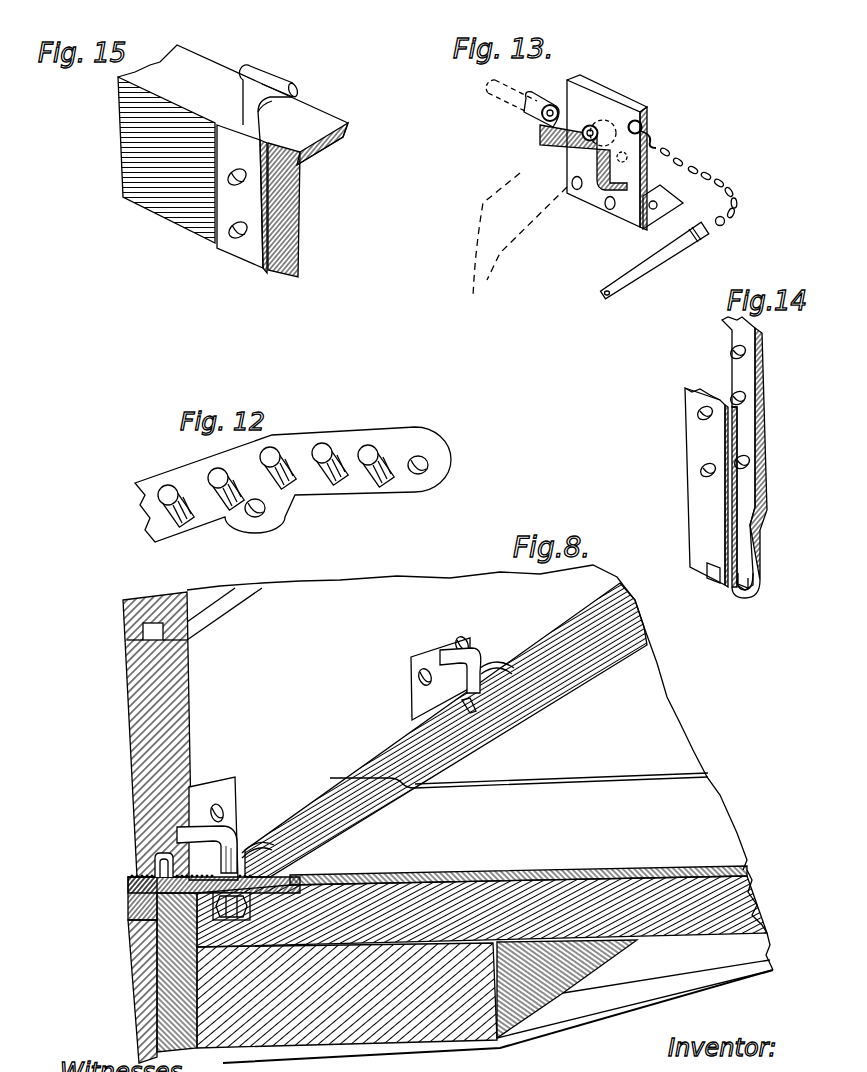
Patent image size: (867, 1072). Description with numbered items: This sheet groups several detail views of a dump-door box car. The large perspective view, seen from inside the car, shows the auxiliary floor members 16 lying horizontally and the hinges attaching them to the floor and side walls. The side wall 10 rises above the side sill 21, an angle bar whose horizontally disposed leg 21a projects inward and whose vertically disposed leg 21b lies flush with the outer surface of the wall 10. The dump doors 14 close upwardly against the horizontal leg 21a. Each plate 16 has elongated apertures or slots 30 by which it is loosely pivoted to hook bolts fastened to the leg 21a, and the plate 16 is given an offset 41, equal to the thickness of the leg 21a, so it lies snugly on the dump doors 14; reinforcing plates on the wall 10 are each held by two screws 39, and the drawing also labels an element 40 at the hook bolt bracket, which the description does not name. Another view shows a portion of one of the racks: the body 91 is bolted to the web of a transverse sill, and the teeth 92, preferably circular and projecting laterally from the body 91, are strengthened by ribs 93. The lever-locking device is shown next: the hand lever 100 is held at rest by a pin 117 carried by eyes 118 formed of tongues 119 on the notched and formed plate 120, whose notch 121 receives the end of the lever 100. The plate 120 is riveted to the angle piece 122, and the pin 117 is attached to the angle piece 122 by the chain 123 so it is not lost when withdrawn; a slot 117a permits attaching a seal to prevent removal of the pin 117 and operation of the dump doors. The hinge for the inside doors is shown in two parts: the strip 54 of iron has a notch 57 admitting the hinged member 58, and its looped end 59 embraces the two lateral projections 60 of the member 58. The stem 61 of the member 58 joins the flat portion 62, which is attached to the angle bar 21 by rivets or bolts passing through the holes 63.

In FIG. 8, the side wall 10 is at (140, 757).
In FIG. 8, the dump door 14 is at (485, 966).
In FIG. 8, the auxiliary floor member 16 is at (467, 717).
In FIG. 15, the side sill 21 is at (233, 161).
In FIG. 8, the side sill 21 is at (137, 947).
In FIG. 8, the horizontally disposed leg 21a is at (130, 887).
In FIG. 8, the vertically disposed leg 21b is at (140, 1013).
In FIG. 8, the elongated aperture 30 is at (481, 707).
In FIG. 8, the screw 39 is at (410, 670).
In FIG. 8, the hook 40 is at (433, 657).
In FIG. 8, the offset 41 is at (302, 873).
In FIG. 14, the strip 54 is at (766, 368).
In FIG. 14, the notch 57 is at (712, 586).
In FIG. 15, the hinged member 58 is at (252, 97).
In FIG. 14, the looped end 59 is at (745, 601).
In FIG. 15, the lateral projection 60 is at (268, 73).
In FIG. 15, the stem 61 is at (248, 112).
In FIG. 15, the flat portion 62 is at (227, 205).
In FIG. 15, the hole 63 is at (233, 243).
In FIG. 12, the body 91 is at (362, 482).
In FIG. 12, the tooth 92 is at (272, 457).
In FIG. 12, the rib 93 is at (225, 507).
In FIG. 13, the hand lever 100 is at (510, 249).
In FIG. 13, the pin 117 is at (514, 88).
In FIG. 13, the slot 117a is at (627, 293).
In FIG. 13, the eye 118 is at (585, 112).
In FIG. 13, the tongue 119 is at (543, 129).
In FIG. 13, the plate 120 is at (597, 200).
In FIG. 13, the notch 121 is at (570, 153).
In FIG. 13, the angle piece 122 is at (624, 109).
In FIG. 13, the chain 123 is at (714, 176).